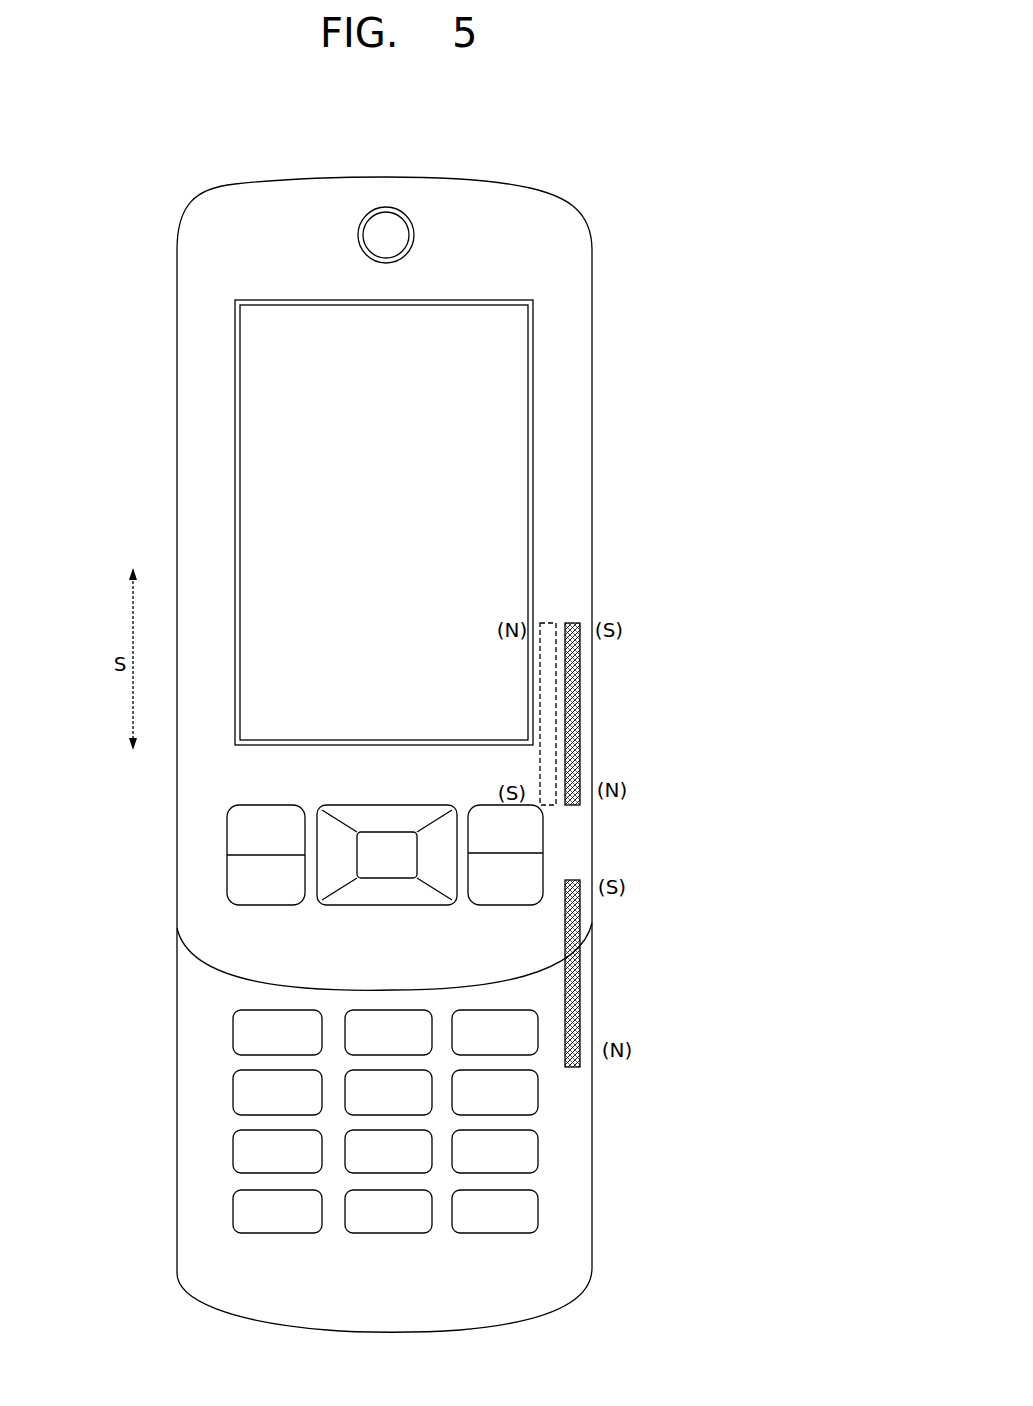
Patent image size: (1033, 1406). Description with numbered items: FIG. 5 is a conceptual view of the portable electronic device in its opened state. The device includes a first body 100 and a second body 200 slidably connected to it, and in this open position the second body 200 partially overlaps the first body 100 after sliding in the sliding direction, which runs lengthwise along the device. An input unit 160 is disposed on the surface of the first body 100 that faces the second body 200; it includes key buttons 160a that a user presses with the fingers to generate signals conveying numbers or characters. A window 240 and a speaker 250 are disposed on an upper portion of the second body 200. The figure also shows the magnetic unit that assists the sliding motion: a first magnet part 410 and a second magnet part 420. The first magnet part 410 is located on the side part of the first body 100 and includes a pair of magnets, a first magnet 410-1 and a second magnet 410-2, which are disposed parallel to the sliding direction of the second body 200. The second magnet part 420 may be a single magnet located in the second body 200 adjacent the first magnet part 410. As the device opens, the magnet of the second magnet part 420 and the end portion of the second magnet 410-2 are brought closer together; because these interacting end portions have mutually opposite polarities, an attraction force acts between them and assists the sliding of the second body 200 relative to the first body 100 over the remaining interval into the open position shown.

The first body 100 is at (612, 1188).
The second body 200 is at (622, 380).
The window 240 is at (484, 322).
The speaker 250 is at (384, 220).
The input unit 160 is at (485, 1156).
The key button 160a is at (587, 1246).
The first magnet part 410 is at (662, 845).
The first magnet 410-1 is at (626, 973).
The second magnet 410-2 is at (573, 688).
The second magnet part 420 is at (546, 662).